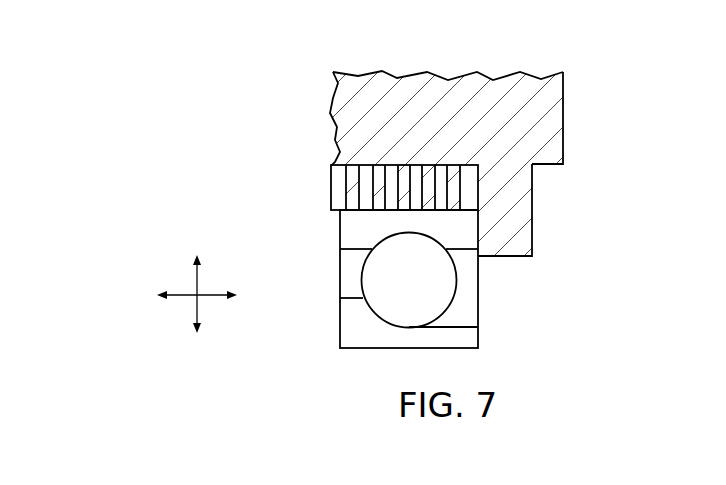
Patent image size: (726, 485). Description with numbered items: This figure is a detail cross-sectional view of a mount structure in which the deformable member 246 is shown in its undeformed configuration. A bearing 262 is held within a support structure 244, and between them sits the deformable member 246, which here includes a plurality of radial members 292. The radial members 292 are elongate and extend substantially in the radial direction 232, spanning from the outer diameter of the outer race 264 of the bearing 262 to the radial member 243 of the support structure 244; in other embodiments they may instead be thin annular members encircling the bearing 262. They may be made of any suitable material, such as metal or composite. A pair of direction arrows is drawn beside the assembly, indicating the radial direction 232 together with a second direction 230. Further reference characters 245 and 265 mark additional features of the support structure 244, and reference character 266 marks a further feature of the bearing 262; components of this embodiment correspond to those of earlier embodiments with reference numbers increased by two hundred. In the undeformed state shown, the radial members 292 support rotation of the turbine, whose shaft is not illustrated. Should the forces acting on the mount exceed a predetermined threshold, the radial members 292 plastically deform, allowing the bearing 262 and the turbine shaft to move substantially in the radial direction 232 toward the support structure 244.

The first direction axis 230 is at (218, 292).
The radial direction 232 is at (195, 270).
The radial member 243 is at (341, 90).
The support structure 244 is at (423, 169).
The stepped surface 245 is at (531, 203).
The deformable member 246 is at (326, 184).
The bearing 262 is at (436, 291).
The outer race 264 is at (347, 228).
The outer edge surface 265 is at (562, 92).
The lower portion of lower block 266 is at (347, 330).
The radial members 292 is at (378, 165).